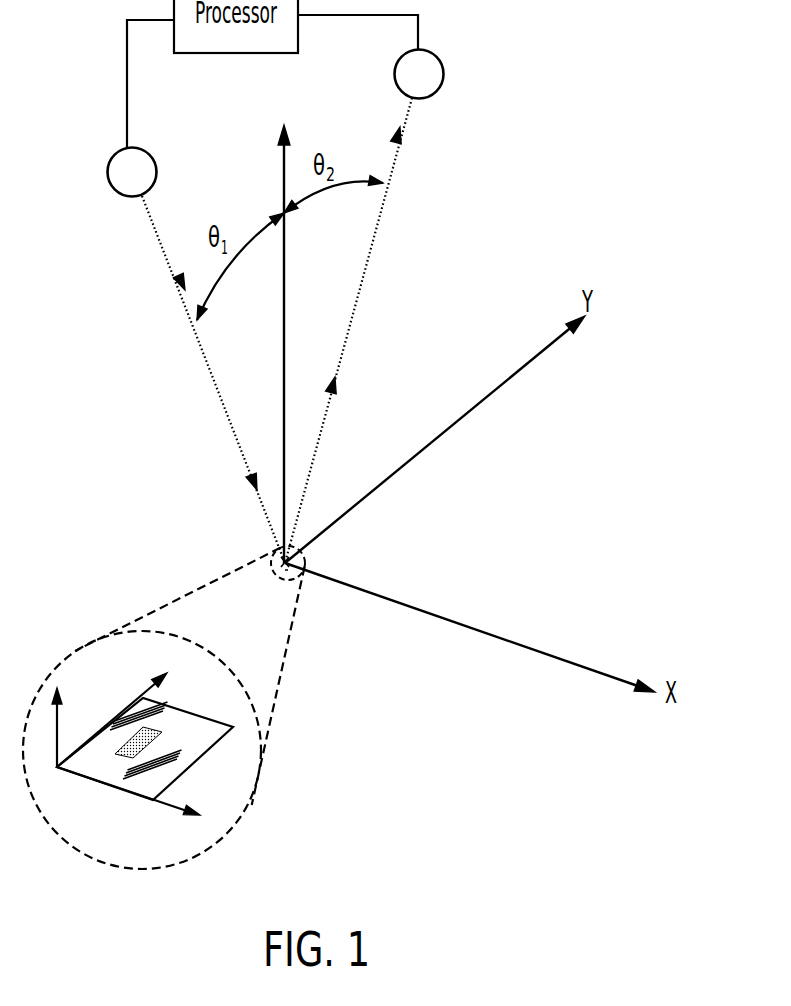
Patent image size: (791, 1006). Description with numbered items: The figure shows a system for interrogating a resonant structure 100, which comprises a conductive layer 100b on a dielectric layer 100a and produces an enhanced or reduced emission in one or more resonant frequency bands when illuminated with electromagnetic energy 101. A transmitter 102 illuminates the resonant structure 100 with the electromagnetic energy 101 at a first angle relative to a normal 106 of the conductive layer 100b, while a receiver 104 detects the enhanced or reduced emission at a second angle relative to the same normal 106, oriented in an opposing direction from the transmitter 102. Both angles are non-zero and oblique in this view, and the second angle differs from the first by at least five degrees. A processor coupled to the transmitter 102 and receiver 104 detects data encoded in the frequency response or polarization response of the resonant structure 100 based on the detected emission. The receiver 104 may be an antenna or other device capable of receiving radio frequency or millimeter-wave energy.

The resonant structure 100 is at (275, 580).
The dielectric layer 100a is at (127, 792).
The conductive layer 100b is at (160, 737).
The electromagnetic energy 101 is at (210, 372).
The transmitter 102 is at (120, 197).
The receiver 104 is at (426, 98).
The normal 106 is at (283, 293).